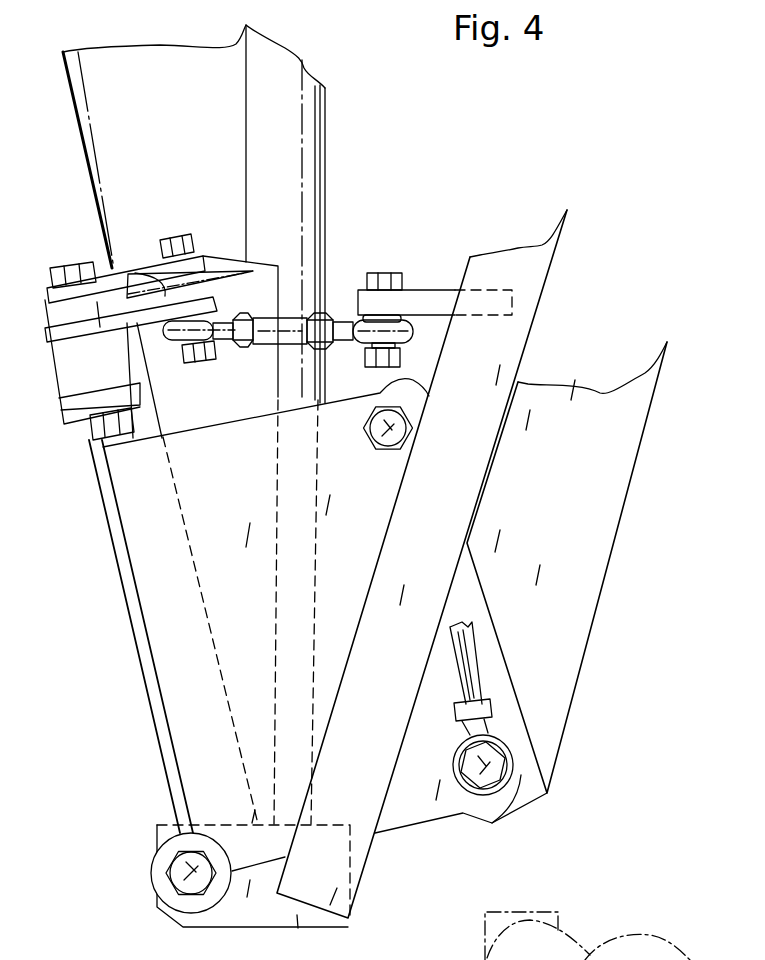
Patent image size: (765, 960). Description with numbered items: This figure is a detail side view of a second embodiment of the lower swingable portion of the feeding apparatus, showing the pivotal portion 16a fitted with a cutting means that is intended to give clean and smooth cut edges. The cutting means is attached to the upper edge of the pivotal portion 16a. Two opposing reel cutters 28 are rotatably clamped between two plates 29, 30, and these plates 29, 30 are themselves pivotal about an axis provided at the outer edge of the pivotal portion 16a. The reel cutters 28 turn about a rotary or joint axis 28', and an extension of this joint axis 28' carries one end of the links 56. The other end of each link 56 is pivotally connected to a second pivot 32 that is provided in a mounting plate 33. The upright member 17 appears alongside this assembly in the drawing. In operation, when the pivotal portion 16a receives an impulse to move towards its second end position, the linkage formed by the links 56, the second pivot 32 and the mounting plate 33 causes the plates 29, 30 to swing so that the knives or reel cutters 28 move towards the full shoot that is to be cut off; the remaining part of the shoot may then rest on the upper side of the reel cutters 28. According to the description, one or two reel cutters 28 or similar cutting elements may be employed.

The post 17 is at (288, 97).
The pivotal portion 16a is at (188, 727).
The reel cutter 28 is at (202, 301).
The rotary or joint axis 28' is at (183, 269).
The plate 29 is at (102, 263).
The plate 30 is at (145, 328).
The second pivot 32 is at (388, 272).
The mounting plate 33 is at (428, 302).
The link 56 is at (283, 326).